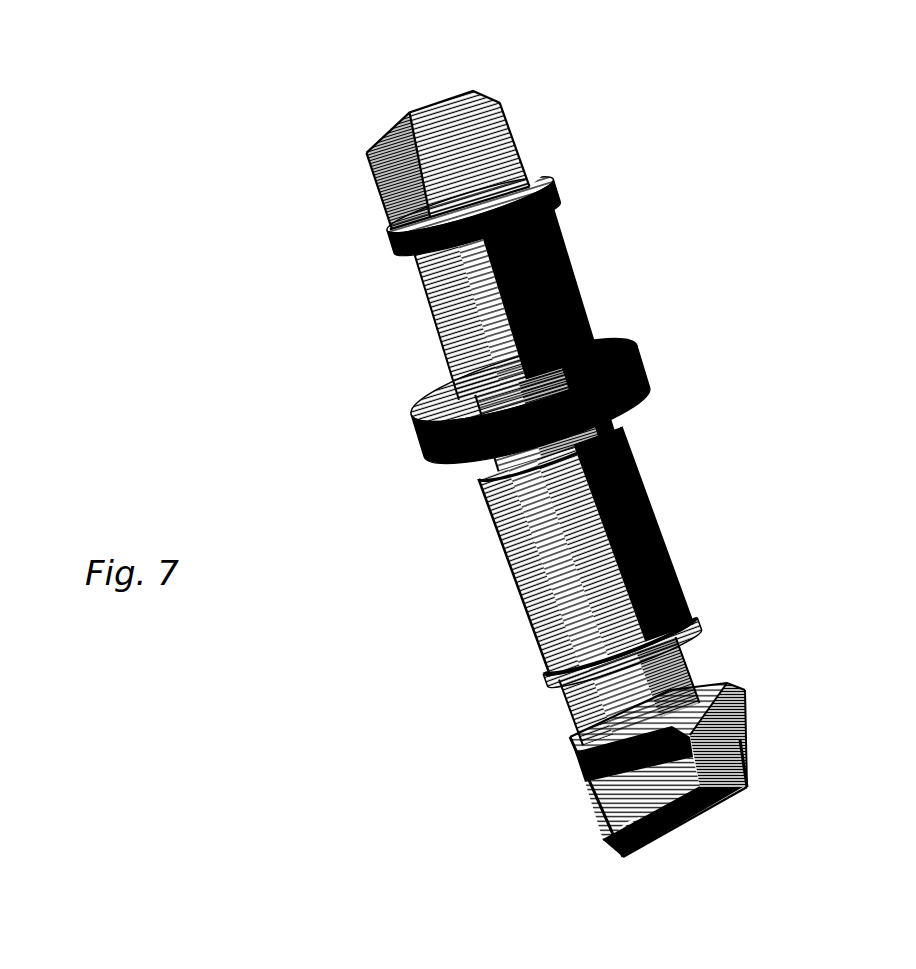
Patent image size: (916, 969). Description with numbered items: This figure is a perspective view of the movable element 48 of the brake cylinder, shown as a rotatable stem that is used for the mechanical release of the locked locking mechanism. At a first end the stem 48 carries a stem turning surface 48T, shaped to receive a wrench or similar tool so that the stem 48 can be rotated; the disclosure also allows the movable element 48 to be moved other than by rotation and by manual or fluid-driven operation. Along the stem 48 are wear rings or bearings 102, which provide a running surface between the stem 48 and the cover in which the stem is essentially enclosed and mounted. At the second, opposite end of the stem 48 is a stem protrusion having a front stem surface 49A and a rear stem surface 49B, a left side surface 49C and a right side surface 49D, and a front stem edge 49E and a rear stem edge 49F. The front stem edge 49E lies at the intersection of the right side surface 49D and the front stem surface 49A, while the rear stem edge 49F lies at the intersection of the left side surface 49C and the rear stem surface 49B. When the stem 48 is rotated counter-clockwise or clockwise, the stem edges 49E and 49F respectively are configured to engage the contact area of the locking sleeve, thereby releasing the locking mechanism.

The movable element 48 is at (700, 162).
The stem turning surface 48T is at (520, 112).
The wear rings or bearings 102 is at (545, 195).
The front stem surface 49A is at (727, 690).
The rear stem surface 49B is at (596, 827).
The left side surface 49C is at (620, 832).
The right side surface 49D is at (750, 730).
The front stem edge 49E is at (752, 767).
The rear stem edge 49F is at (668, 854).